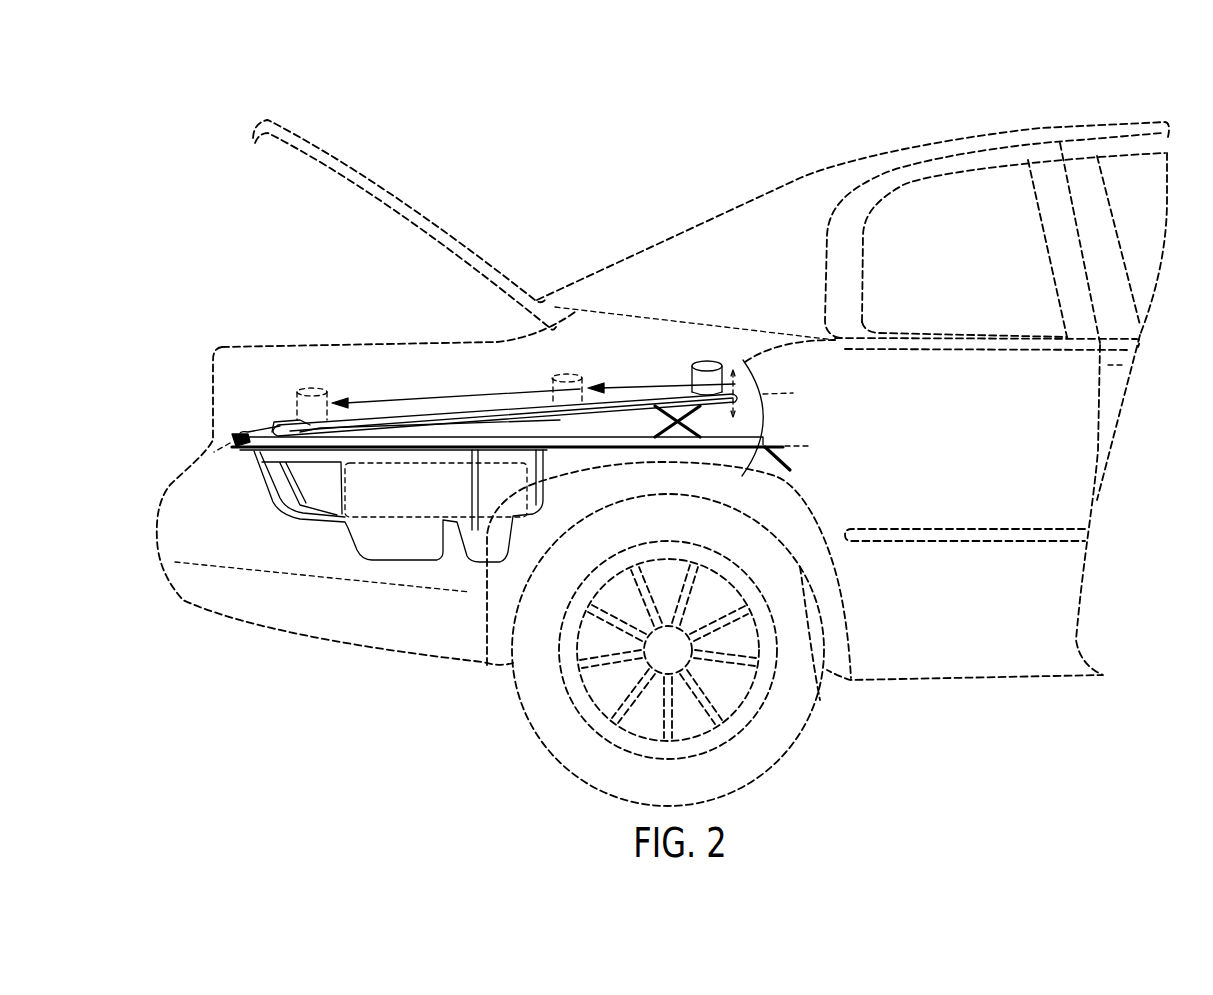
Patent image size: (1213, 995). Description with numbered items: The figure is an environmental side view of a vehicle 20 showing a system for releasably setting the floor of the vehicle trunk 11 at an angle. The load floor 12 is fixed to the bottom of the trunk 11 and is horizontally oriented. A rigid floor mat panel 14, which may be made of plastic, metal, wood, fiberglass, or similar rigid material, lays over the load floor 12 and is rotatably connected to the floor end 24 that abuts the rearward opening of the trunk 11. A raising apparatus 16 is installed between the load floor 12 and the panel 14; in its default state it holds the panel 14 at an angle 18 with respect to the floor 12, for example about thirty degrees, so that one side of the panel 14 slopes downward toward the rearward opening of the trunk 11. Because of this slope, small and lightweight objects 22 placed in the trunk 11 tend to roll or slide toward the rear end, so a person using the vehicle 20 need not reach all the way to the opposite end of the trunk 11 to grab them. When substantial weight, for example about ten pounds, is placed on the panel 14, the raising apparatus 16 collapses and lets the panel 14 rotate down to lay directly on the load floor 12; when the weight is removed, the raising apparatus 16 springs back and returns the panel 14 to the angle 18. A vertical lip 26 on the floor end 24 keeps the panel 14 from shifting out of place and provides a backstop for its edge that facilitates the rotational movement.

The vehicle trunk 11 is at (282, 226).
The load floor 12 is at (520, 477).
The rigid floor mat panel 14 is at (488, 397).
The raising apparatus 16 is at (644, 422).
The angle 18 is at (781, 414).
The vehicle 20 is at (663, 429).
The lightweight objects 22 is at (506, 349).
The floor end 24 is at (371, 506).
The vertical lip 26 is at (210, 427).